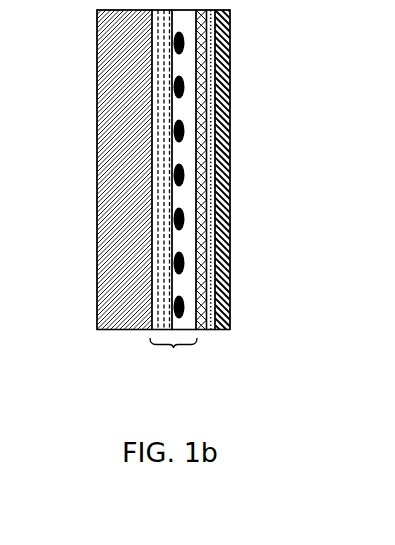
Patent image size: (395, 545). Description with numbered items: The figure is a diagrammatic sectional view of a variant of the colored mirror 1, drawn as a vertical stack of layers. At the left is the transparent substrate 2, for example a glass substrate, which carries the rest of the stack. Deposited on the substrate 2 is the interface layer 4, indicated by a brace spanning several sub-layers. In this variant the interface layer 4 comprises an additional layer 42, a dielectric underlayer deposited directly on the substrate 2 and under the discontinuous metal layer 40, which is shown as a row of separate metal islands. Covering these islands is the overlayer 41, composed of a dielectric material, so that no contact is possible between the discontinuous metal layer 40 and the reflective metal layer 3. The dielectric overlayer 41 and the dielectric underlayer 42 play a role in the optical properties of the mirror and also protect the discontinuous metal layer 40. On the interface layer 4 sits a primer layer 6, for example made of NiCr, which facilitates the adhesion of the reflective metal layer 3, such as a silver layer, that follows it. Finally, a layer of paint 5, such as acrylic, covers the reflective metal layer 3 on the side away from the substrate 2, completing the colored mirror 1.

The colored mirror 1 is at (55, 238).
The transparent substrate 2 is at (128, 330).
The reflective metal layer 3 is at (210, 330).
The interface layer 4 is at (167, 370).
The layer of paint 5 is at (230, 324).
The primer layer 6 is at (200, 330).
The discontinuous metal layer 40 is at (185, 218).
The overlayer 41 is at (181, 321).
The additional layer 42 is at (158, 330).